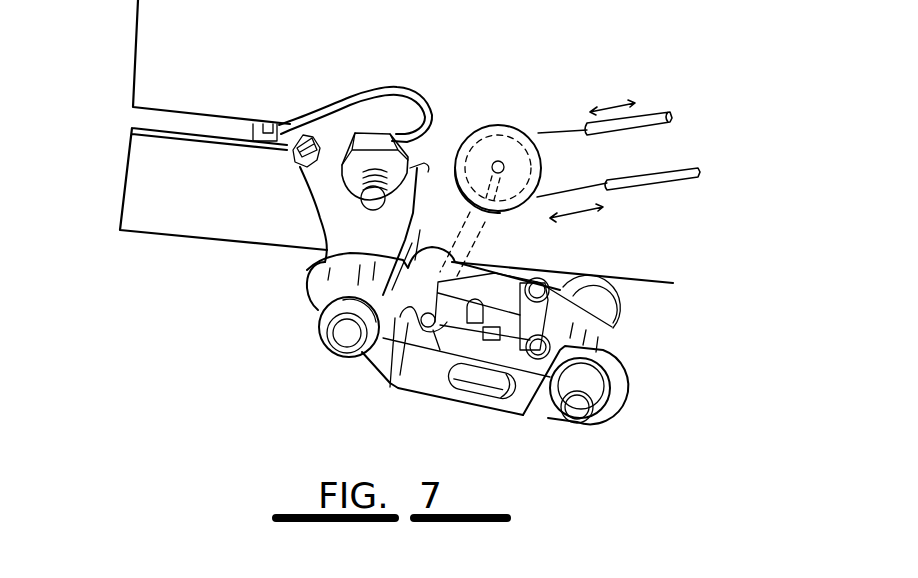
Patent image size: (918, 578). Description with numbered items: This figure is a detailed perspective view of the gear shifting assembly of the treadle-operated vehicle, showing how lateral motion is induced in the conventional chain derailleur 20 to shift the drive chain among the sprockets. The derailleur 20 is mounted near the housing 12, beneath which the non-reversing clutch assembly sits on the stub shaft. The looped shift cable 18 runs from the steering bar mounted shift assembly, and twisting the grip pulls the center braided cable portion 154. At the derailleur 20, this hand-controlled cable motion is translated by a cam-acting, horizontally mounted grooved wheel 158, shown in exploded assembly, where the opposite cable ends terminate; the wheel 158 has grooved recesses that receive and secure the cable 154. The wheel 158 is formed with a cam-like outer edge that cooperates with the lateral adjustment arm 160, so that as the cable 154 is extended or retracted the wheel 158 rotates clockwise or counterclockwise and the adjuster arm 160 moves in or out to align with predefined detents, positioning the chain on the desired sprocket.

The housing 12 is at (250, 73).
The shift cable 18 is at (657, 112).
The chain derailleur 20 is at (320, 295).
The center braided cable portion 154 is at (563, 130).
The grooved wheel 158 is at (483, 125).
The lateral adjustment arm 160 is at (620, 357).